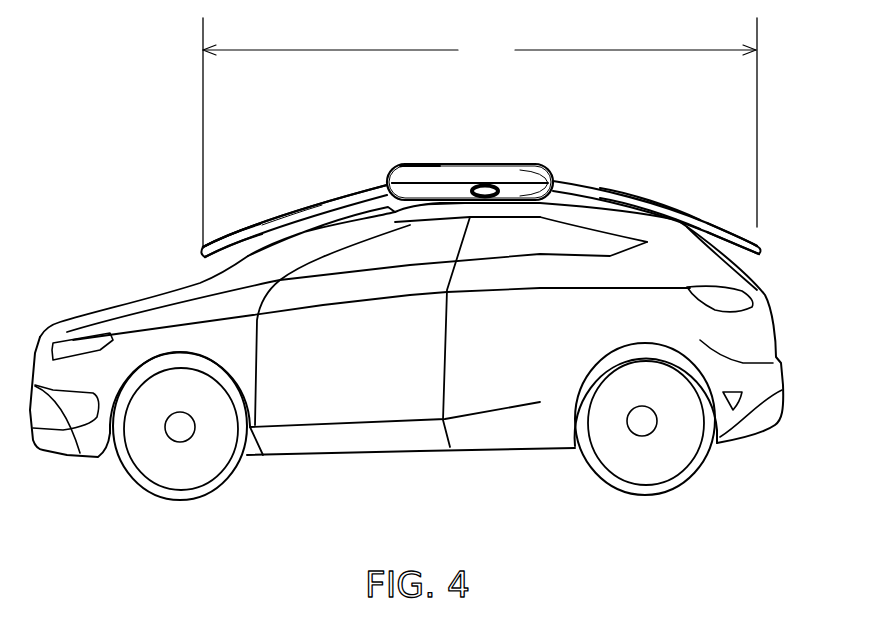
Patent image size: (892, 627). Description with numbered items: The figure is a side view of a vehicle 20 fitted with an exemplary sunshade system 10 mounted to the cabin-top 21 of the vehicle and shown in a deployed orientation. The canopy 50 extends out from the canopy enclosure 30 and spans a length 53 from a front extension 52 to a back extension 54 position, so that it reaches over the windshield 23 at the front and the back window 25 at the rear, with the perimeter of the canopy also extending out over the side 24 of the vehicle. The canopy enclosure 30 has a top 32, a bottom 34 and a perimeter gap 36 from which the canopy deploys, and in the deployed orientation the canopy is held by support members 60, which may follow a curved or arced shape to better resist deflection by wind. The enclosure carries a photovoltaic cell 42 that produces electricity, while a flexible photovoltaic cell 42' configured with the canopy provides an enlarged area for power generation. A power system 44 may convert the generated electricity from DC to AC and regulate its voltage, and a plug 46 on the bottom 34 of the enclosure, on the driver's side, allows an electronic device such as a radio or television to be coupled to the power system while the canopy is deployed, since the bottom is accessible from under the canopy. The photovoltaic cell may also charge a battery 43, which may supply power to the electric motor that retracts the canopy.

The sunshade system 10 is at (380, 162).
The vehicle 20 is at (95, 308).
The cabin-top 21 is at (600, 207).
The windshield 23 is at (262, 222).
The side 24 is at (478, 318).
The back window 25 is at (733, 273).
The canopy enclosure 30 is at (473, 167).
The top 32 is at (537, 178).
The bottom 34 is at (404, 174).
The perimeter gap 36 is at (448, 172).
The photovoltaic cell 42 is at (410, 118).
The flexible photovoltaic cell 42' is at (278, 169).
The battery 43 is at (450, 210).
The power system 44 is at (500, 178).
The plug 46 is at (484, 188).
The canopy 50 is at (327, 205).
The front extension 52 is at (202, 252).
The length 53 is at (480, 133).
The back extension 54 is at (762, 250).
The support members 60 is at (657, 212).